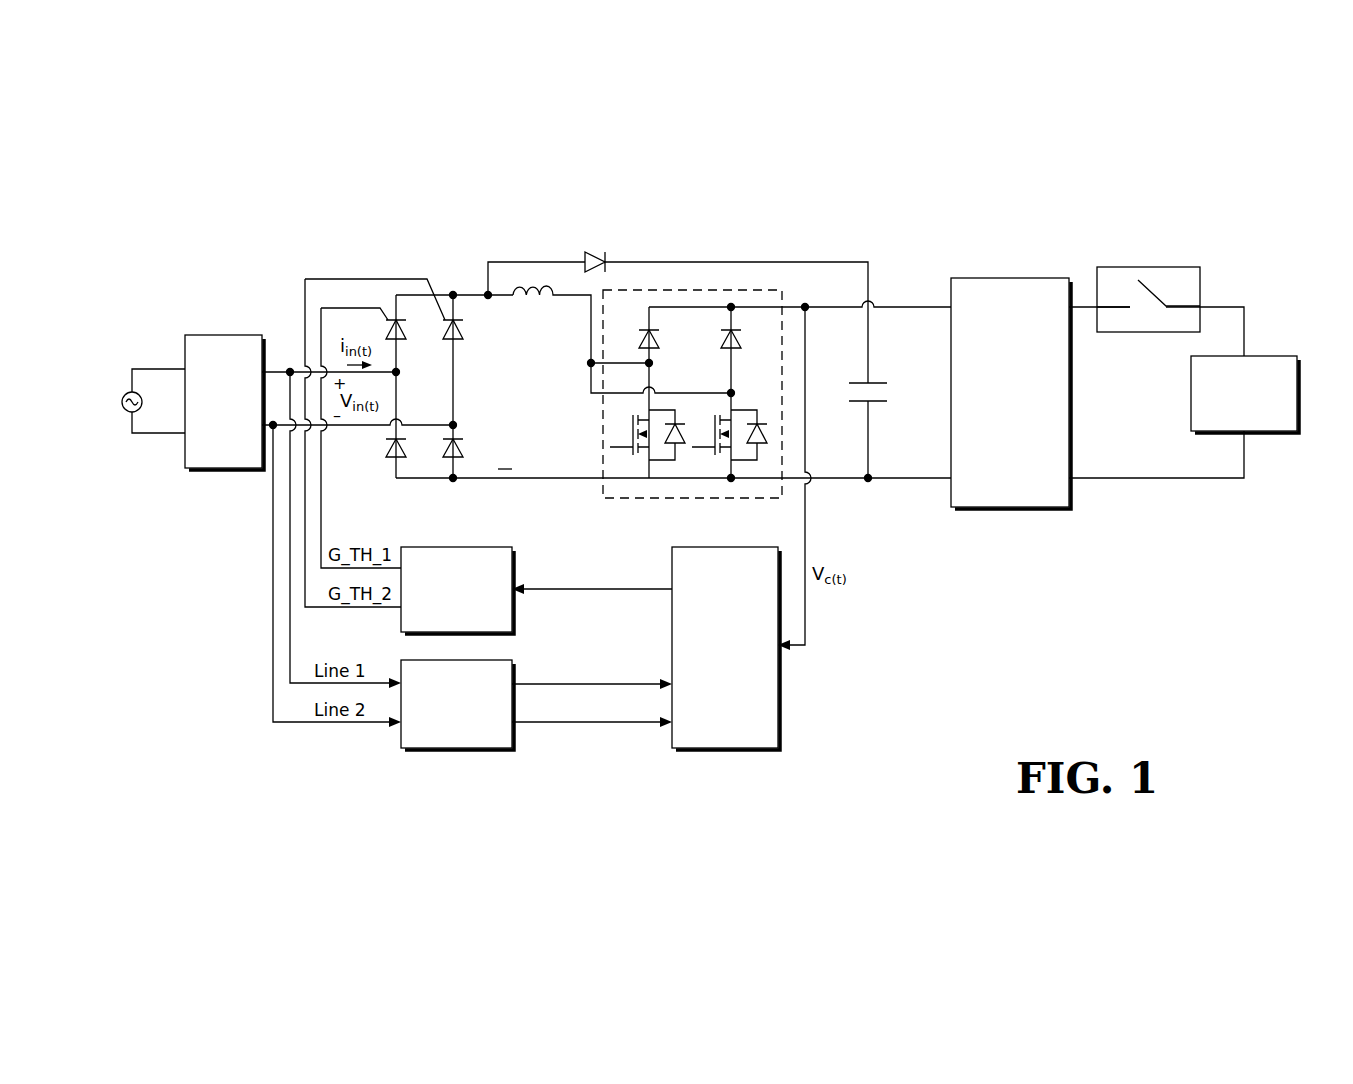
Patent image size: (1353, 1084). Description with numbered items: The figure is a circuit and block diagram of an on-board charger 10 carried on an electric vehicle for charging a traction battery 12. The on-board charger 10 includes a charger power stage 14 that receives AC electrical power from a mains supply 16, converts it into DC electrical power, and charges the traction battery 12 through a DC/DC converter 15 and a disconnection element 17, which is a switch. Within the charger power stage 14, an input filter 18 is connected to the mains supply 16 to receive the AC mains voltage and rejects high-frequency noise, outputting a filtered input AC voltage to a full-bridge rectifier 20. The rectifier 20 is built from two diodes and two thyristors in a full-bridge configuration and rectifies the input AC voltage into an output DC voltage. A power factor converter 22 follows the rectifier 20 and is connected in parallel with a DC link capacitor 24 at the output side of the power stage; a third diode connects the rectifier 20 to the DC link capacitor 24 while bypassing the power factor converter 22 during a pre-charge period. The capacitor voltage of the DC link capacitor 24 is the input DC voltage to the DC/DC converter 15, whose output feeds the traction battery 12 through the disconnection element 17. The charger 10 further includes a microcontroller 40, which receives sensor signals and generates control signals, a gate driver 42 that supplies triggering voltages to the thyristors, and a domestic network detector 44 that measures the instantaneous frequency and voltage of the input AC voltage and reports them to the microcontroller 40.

The on-board charger 10 is at (961, 205).
The traction battery 12 is at (1270, 356).
The charger power stage 14 is at (595, 387).
The DC/DC converter 15 is at (1008, 278).
The mains supply 16 is at (127, 410).
The disconnection element 17 is at (1148, 267).
The input filter 18 is at (222, 335).
The full-bridge rectifier 20 is at (470, 392).
The power factor converter 22 is at (706, 394).
The DC link capacitor 24 is at (878, 381).
The microcontroller 40 is at (778, 703).
The gate driver 42 is at (457, 547).
The domestic network detector 44 is at (457, 748).